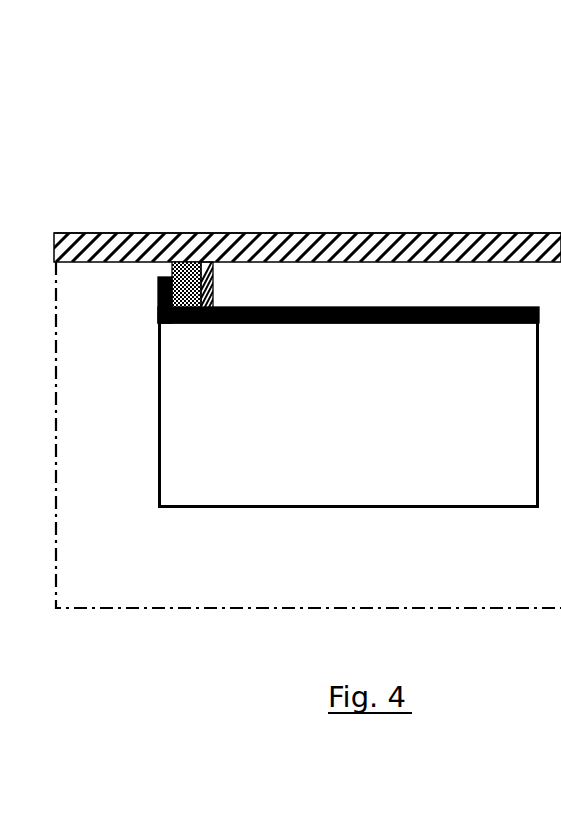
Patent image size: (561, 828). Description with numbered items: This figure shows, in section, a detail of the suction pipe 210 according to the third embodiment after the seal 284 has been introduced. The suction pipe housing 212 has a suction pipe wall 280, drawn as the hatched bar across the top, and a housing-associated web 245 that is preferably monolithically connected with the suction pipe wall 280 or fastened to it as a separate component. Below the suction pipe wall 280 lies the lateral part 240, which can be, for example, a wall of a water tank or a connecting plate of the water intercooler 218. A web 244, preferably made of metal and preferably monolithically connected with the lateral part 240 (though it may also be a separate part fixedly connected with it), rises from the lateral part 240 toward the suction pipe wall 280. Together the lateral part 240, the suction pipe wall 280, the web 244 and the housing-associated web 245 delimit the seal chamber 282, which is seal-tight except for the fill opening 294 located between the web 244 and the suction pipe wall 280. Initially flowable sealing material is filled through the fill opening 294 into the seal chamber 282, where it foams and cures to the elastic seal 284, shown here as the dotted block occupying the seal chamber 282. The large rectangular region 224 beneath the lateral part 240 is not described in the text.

The suction pipe 210 is at (132, 87).
The suction pipe housing 212 is at (506, 233).
The suction pipe wall 280 is at (417, 233).
The seal 284 is at (186, 272).
The housing-associated web 245 is at (213, 282).
The web 244 is at (158, 293).
The fill opening 294 is at (168, 268).
The lateral part 240 is at (496, 323).
The seal chamber 282 is at (198, 323).
The water intercooler 218 is at (483, 509).
The cavity 224 is at (315, 485).